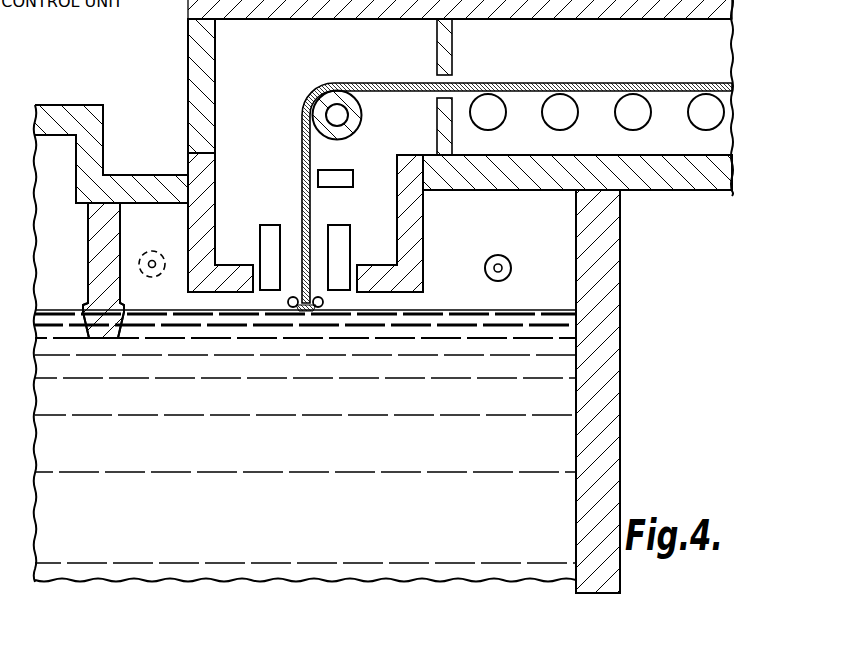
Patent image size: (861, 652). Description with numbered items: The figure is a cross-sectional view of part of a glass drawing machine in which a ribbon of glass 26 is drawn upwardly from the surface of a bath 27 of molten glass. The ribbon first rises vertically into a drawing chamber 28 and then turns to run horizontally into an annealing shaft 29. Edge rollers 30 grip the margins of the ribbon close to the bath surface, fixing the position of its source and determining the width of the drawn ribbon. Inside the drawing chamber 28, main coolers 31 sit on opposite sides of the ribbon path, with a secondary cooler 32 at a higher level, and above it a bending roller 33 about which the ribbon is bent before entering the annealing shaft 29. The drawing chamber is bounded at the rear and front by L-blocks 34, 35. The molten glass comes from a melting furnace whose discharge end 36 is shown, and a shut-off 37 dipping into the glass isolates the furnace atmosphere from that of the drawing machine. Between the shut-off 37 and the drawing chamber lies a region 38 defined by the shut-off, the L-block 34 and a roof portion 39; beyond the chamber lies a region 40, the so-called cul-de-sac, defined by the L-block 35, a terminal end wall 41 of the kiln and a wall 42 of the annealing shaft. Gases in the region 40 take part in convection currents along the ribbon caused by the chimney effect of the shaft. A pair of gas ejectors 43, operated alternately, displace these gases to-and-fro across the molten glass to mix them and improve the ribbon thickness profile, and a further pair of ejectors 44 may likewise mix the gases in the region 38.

The ribbon of glass 26 is at (302, 178).
The bath of molten glass 27 is at (283, 451).
The drawing chamber 28 is at (236, 125).
The annealing shaft 29 is at (573, 55).
The edge rollers 30 is at (293, 297).
The main coolers 31 is at (268, 247).
The secondary cooler 32 is at (332, 179).
The bending roller 33 is at (362, 114).
The L-block 34 is at (202, 193).
The L-block 35 is at (398, 187).
The discharge end of glass melting furnace 36 is at (38, 236).
The shut-off 37 is at (97, 267).
The region 38 is at (167, 236).
The roof portion 39 is at (130, 190).
The region 40 is at (531, 231).
The terminal end wall 41 is at (597, 270).
The wall of annealing shaft 42 is at (476, 176).
The gas ejectors 43 is at (511, 268).
The ejectors 44 is at (148, 275).